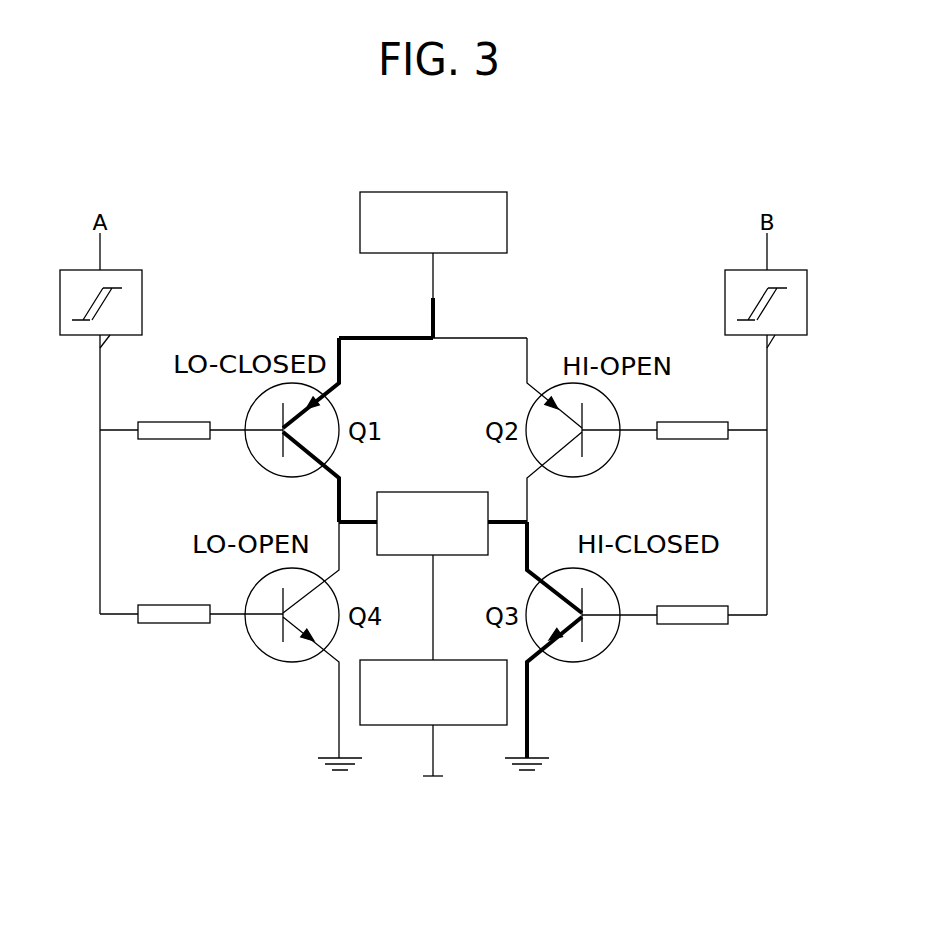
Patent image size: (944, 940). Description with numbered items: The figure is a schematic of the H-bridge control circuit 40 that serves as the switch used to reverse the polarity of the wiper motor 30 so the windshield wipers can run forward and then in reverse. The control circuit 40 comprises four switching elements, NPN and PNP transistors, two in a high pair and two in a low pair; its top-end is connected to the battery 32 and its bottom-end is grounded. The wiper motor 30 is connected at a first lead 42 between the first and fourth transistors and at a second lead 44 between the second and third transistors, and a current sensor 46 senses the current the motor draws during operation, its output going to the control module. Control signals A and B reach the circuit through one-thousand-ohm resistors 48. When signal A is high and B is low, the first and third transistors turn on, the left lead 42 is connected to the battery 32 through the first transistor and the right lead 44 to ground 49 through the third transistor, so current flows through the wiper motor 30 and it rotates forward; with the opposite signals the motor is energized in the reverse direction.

The wiper motor 30 is at (431, 491).
The battery 32 is at (507, 210).
The control circuit 40 is at (803, 455).
The first lead 42 is at (375, 528).
The second lead 44 is at (492, 528).
The current sensor 46 is at (402, 725).
The 1000 ohm resistors 48 is at (163, 440).
The ground 49 is at (537, 765).